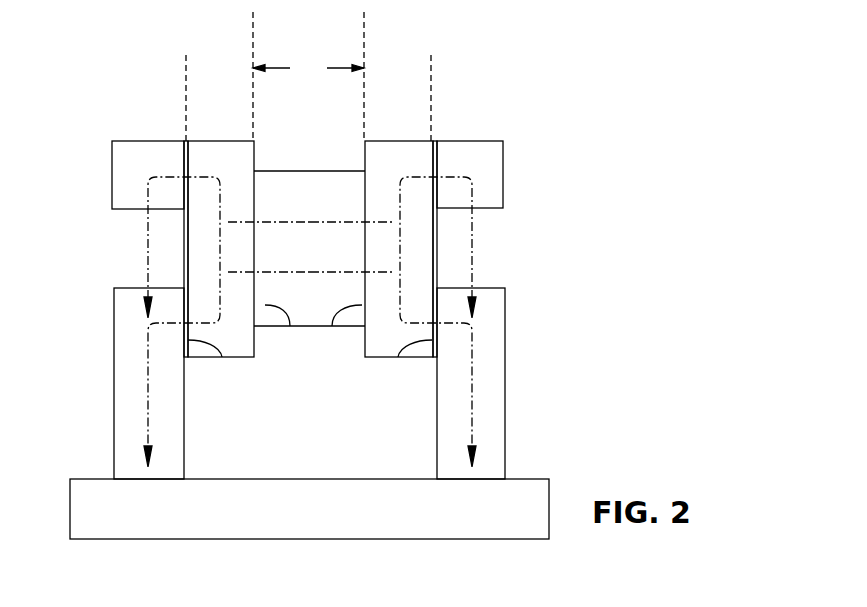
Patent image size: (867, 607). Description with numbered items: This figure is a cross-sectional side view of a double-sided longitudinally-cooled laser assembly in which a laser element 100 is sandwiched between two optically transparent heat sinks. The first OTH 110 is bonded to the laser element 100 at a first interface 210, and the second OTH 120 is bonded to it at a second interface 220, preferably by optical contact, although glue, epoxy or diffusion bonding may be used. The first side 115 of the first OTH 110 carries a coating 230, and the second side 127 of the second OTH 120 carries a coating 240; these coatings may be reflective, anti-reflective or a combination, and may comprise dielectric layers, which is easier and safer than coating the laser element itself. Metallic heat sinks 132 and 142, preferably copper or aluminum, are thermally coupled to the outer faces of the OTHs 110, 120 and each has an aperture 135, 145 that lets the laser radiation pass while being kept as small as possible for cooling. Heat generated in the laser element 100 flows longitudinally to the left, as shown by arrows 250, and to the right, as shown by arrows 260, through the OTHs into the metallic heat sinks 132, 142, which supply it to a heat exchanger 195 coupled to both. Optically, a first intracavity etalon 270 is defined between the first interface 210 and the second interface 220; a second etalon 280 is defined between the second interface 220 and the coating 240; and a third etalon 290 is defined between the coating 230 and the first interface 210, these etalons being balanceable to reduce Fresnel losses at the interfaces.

The laser element 100 is at (307, 171).
The first OTH 110 is at (217, 141).
The first side of the first OTH 115 is at (222, 357).
The second OTH 120 is at (399, 141).
The second side of the second OTH 127 is at (398, 357).
The first metallic section 132 is at (112, 171).
The aperture 135 is at (128, 210).
The first metallic section 142 is at (503, 170).
The aperture 145 is at (488, 210).
The heat exchanger 195 is at (317, 479).
The first interface 210 is at (290, 326).
The second interface 220 is at (332, 326).
The coating 230 is at (184, 141).
The coating 240 is at (437, 141).
The arrows 250 is at (228, 222).
The arrows 260 is at (392, 222).
The first intracavity etalon 270 is at (213, 25).
The second etalon 280 is at (431, 68).
The third etalon 290 is at (186, 68).